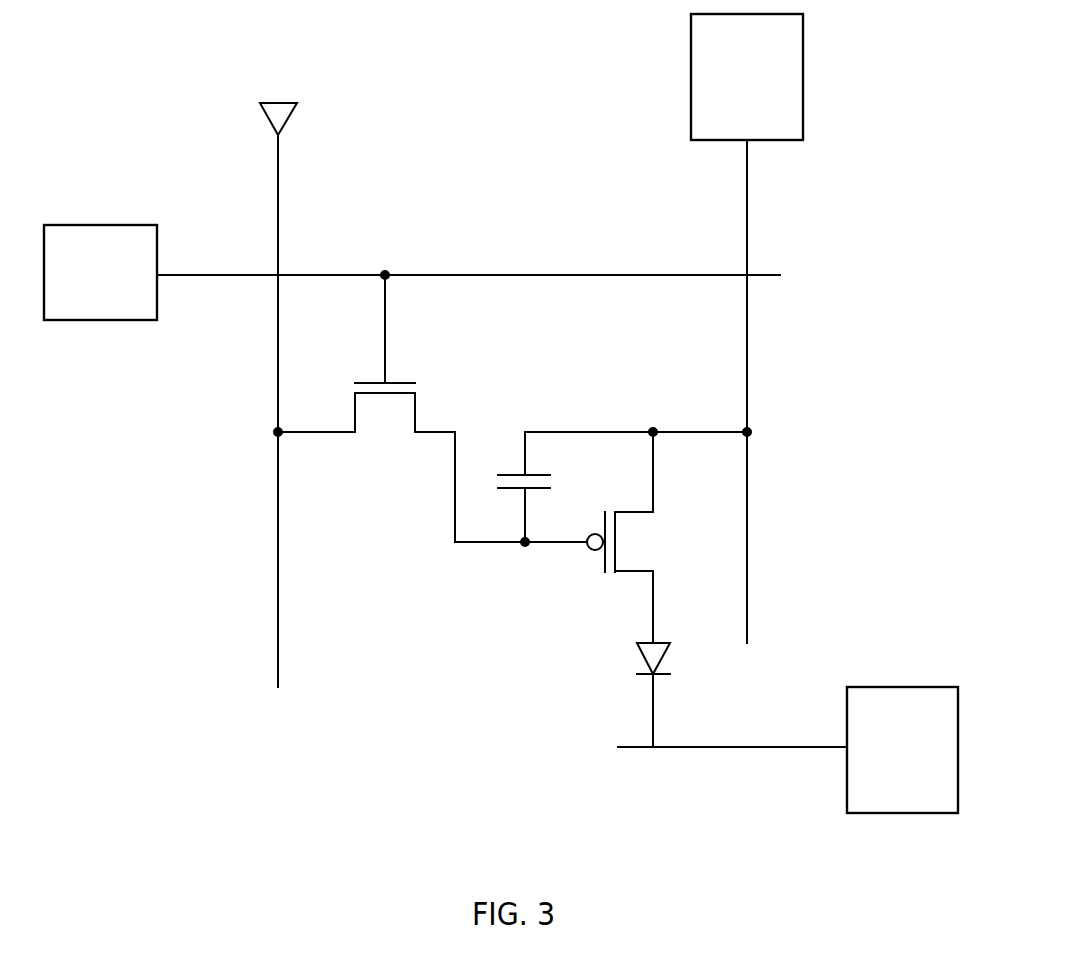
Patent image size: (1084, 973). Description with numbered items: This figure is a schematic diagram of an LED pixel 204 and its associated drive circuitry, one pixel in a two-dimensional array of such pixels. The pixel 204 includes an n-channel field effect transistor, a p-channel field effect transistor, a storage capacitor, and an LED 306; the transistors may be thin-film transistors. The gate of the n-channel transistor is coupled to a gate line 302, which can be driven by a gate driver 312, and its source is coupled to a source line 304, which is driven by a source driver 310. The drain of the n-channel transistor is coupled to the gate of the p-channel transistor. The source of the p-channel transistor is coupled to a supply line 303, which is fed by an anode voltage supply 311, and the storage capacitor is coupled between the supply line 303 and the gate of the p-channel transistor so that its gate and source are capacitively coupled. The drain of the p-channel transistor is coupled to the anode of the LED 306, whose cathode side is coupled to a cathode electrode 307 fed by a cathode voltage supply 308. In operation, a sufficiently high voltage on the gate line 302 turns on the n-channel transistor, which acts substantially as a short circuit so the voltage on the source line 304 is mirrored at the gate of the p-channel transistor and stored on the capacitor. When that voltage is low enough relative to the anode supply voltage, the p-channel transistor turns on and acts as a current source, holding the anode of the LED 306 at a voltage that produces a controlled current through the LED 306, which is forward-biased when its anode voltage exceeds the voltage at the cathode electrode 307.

The LED pixel 204 is at (551, 222).
The gate line 302 is at (260, 275).
The supply line 303 is at (747, 308).
The source line 304 is at (278, 342).
The LED 306 is at (645, 643).
The cathode electrode 307 is at (628, 747).
The cathode voltage supply 308 is at (918, 806).
The source driver 310 is at (288, 108).
The anode voltage supply 311 is at (763, 132).
The gate driver 312 is at (112, 314).